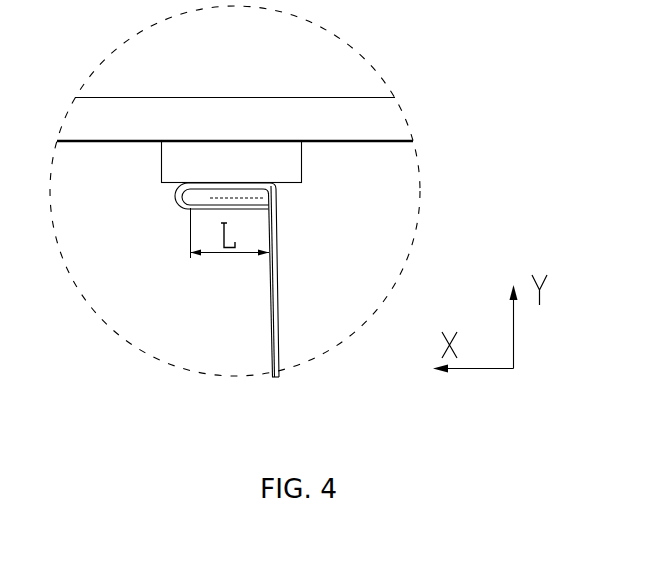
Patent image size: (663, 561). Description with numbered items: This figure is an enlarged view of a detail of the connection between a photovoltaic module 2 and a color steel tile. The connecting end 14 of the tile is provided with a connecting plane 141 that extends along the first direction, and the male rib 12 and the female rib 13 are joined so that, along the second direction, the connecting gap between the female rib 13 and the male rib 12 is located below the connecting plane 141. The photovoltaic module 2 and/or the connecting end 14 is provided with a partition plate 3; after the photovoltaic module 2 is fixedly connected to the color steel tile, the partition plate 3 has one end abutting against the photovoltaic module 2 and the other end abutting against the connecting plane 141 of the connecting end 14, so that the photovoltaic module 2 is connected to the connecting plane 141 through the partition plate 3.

The photovoltaic module 2 is at (166, 116).
The partition plate 3 is at (347, 177).
The male rib 12 is at (272, 369).
The female rib 13 is at (279, 342).
The connecting end 14 is at (186, 208).
The connecting plane 141 is at (210, 183).